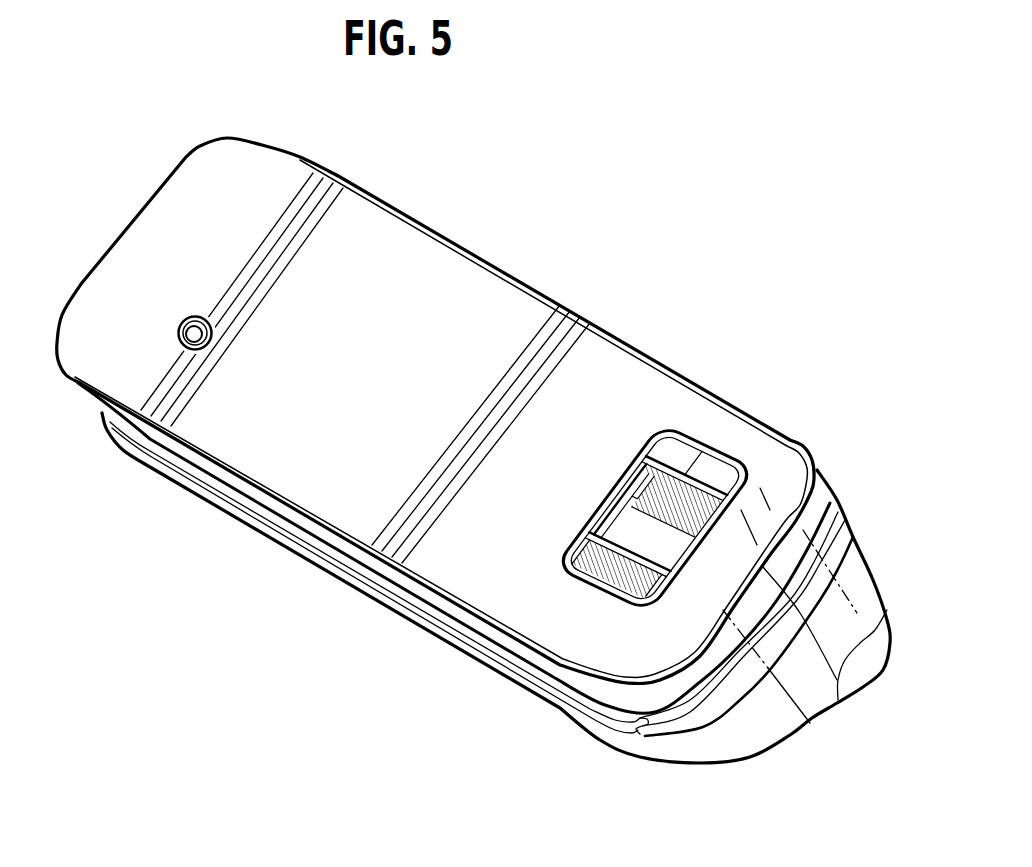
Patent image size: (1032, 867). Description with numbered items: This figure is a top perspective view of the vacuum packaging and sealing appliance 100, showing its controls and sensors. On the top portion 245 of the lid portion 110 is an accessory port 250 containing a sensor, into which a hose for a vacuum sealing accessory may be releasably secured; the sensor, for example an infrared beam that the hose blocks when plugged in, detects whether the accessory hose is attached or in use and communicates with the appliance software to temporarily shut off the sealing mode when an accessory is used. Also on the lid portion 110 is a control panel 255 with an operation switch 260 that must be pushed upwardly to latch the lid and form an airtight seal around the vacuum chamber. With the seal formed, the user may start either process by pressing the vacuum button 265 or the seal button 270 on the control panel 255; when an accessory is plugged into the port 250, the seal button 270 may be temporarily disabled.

The appliance 100 is at (784, 150).
The lid portion 110 is at (680, 360).
The top portion 245 is at (458, 265).
The accessory port 250 is at (182, 321).
The control panel 255 is at (750, 450).
The operation switch 260 is at (688, 447).
The vacuum button 265 is at (690, 470).
The seal button 270 is at (655, 518).